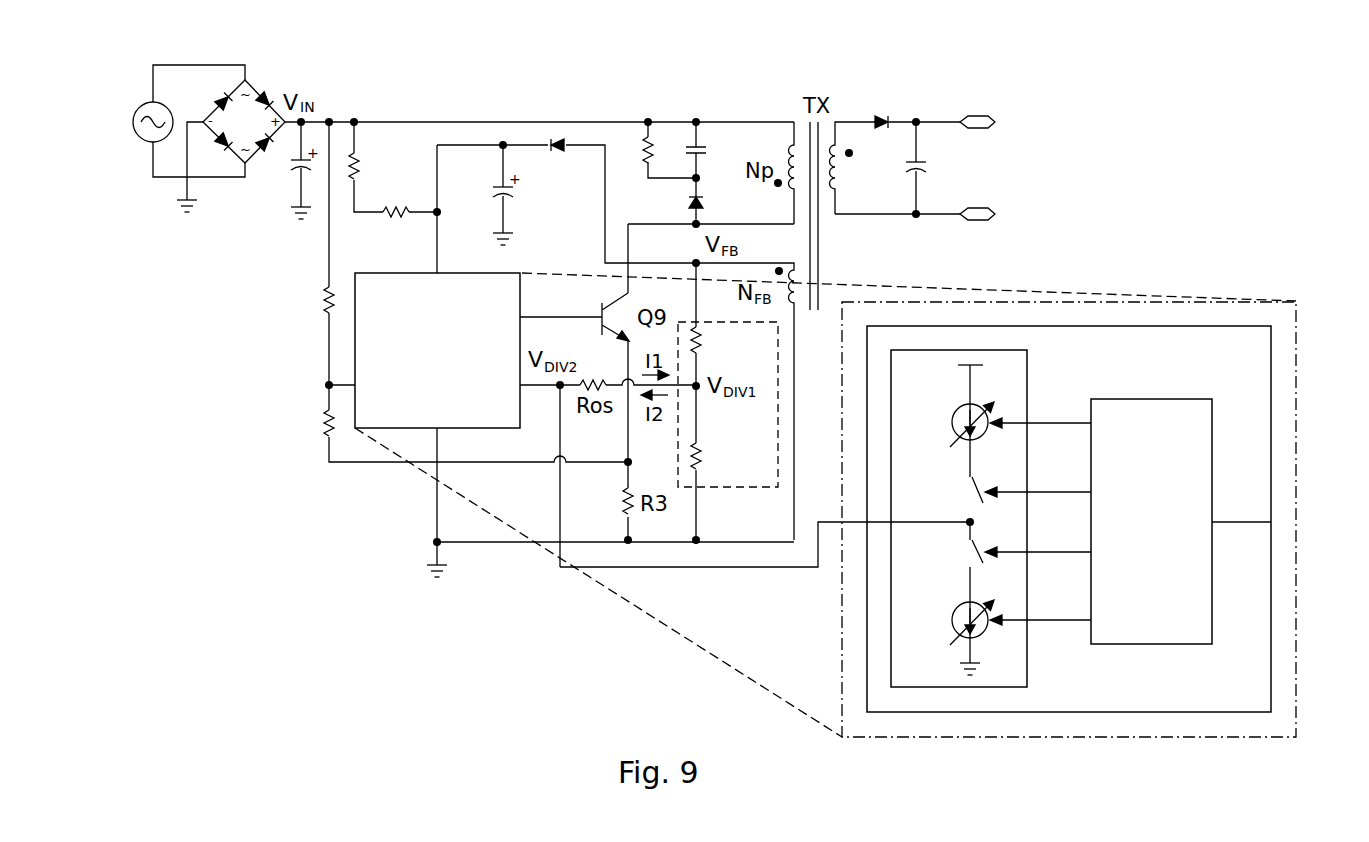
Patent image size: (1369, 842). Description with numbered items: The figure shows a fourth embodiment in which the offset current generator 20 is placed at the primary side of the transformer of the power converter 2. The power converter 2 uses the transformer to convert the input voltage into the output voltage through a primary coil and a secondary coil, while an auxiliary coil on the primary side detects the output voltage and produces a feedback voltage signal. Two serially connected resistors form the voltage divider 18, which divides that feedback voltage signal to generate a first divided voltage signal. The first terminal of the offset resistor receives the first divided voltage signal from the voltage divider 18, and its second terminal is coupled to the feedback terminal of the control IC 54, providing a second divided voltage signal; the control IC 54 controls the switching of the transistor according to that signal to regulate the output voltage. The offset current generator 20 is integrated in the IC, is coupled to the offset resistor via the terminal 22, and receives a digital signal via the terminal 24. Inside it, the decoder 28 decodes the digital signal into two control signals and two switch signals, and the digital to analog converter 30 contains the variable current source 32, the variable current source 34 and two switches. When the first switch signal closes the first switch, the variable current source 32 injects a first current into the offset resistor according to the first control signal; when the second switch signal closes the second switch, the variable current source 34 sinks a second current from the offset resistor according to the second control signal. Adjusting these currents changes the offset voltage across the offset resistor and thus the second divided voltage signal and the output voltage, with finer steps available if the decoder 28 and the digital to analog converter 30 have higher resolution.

The power converter 2 is at (1034, 92).
The voltage divider 18 is at (744, 488).
The offset current generator 20 is at (1222, 713).
The terminal 22 is at (865, 521).
The terminal 24 is at (1272, 523).
The decoder 28 is at (1148, 399).
The digital to analog converter 30 is at (1028, 372).
The variable current source 32 is at (957, 414).
The variable current source 34 is at (955, 611).
The control IC 54 is at (388, 273).